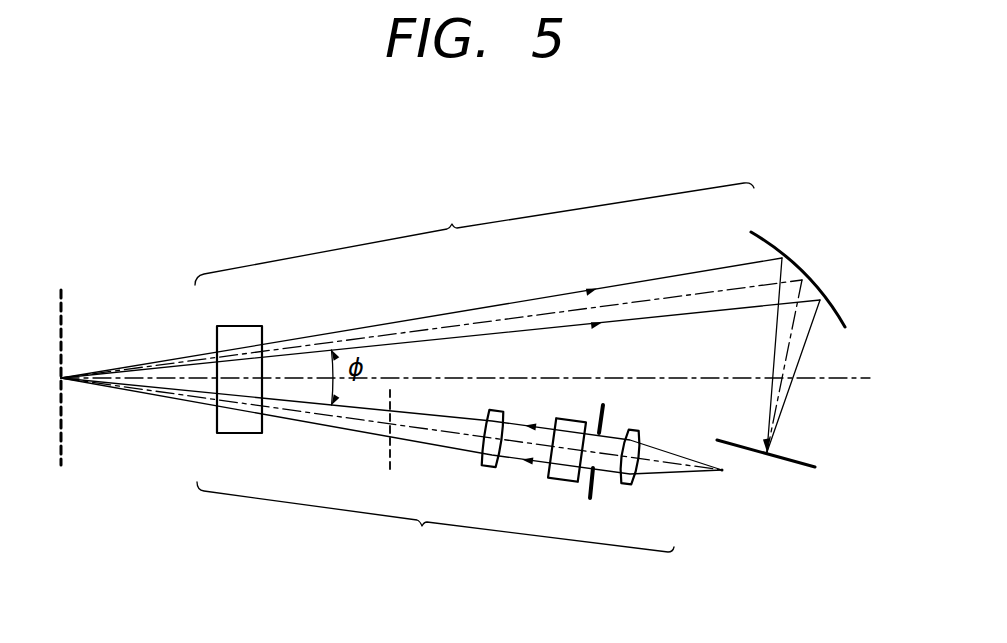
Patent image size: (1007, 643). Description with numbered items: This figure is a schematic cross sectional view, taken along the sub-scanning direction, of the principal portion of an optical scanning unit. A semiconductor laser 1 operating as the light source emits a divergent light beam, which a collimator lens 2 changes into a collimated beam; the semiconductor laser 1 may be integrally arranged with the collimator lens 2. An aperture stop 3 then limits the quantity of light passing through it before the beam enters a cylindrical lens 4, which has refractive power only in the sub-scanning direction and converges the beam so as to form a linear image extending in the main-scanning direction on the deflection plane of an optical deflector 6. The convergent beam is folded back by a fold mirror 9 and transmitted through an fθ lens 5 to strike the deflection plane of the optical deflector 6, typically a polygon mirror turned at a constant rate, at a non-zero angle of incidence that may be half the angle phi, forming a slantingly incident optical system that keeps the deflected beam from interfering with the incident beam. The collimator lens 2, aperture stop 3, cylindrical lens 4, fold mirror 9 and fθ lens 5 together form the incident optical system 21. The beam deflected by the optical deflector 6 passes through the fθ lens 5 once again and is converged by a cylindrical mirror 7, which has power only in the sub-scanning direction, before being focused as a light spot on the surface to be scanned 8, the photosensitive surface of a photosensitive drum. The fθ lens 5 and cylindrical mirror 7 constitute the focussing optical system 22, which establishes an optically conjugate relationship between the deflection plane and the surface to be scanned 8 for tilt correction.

The semiconductor laser 1 is at (727, 473).
The collimator lens 2 is at (634, 481).
The aperture stop 3 is at (594, 488).
The cylindrical lens 4 is at (503, 463).
The fθ lens 5 is at (248, 326).
The optical deflector 6 is at (63, 306).
The cylindrical mirror 7 is at (772, 247).
The surface to be scanned 8 is at (790, 458).
The fold mirror 9 is at (390, 462).
The incident optical system 21 is at (435, 520).
The focussing optical system 22 is at (474, 234).